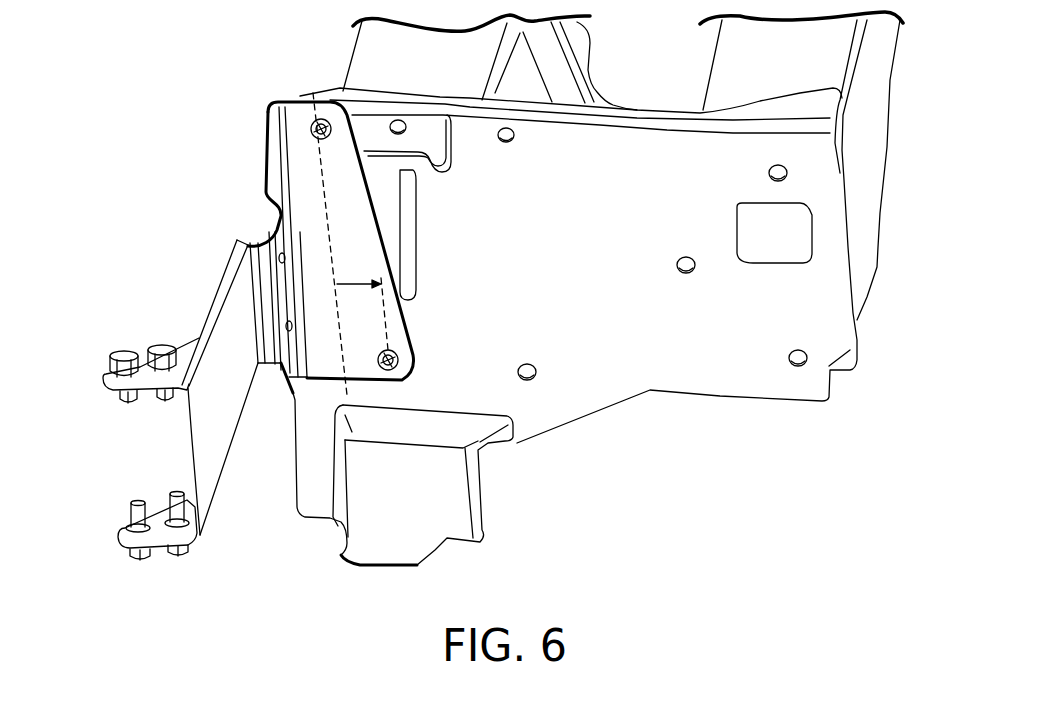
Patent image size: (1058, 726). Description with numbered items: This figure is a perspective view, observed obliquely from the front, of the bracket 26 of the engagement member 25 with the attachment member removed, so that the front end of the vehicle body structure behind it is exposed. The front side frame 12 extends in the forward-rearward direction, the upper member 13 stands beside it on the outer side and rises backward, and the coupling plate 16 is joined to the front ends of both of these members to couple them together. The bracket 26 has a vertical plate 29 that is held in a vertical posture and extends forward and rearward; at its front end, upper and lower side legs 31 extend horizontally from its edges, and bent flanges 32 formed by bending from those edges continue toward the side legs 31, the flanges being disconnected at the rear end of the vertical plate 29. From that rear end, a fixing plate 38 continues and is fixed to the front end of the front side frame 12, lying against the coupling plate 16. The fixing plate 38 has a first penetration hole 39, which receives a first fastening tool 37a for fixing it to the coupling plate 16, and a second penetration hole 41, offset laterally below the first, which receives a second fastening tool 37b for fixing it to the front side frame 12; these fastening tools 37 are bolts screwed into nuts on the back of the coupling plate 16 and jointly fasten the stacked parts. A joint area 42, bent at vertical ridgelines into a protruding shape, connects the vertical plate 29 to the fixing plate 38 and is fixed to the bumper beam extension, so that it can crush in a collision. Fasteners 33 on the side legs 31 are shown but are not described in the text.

The front side frame 12 is at (392, 53).
The upper member 13 is at (887, 53).
The coupling plate 16 is at (828, 111).
The engagement member 25 is at (108, 385).
The bracket 26 is at (228, 263).
The vertical plate 29 is at (240, 427).
The side leg 31 is at (122, 533).
The bent flange 32 is at (240, 241).
The bolt 33 is at (123, 352).
The fastening tool 37 is at (349, 329).
The first fastening tool 37a is at (314, 142).
The second fastening tool 37b is at (382, 383).
The fixing plate 38 is at (363, 243).
The first penetration hole 39 is at (314, 120).
The second penetration hole 41 is at (403, 357).
The joint area 42 is at (278, 275).